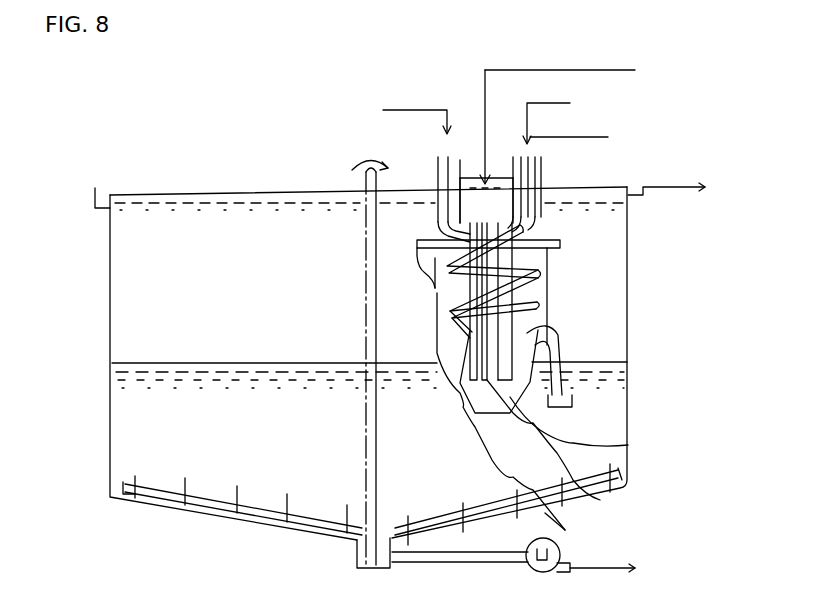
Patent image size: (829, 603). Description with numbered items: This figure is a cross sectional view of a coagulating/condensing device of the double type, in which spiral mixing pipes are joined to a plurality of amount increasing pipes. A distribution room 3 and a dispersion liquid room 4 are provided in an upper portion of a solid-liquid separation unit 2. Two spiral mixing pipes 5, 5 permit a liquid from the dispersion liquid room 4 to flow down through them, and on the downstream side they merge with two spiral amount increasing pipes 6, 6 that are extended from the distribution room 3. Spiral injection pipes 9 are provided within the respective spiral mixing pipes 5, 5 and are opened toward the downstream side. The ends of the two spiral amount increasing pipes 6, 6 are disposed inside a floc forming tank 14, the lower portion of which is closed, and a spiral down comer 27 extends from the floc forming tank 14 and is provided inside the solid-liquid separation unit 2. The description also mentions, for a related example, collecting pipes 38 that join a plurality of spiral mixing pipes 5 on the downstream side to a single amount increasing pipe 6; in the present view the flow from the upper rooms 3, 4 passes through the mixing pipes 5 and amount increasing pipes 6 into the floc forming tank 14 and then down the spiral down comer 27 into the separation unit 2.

The solid-liquid separation unit 2 is at (105, 277).
The distribution room 3 is at (503, 193).
The dispersion liquid room 4 is at (536, 161).
The spiral mixing pipe 5 is at (548, 260).
The spiral amount increasing pipe 6 is at (628, 445).
The spiral injection pipe 9 is at (447, 133).
The floc forming tank 14 is at (528, 310).
The spiral down comer 27 is at (575, 342).
The collecting pipe 38 is at (565, 530).